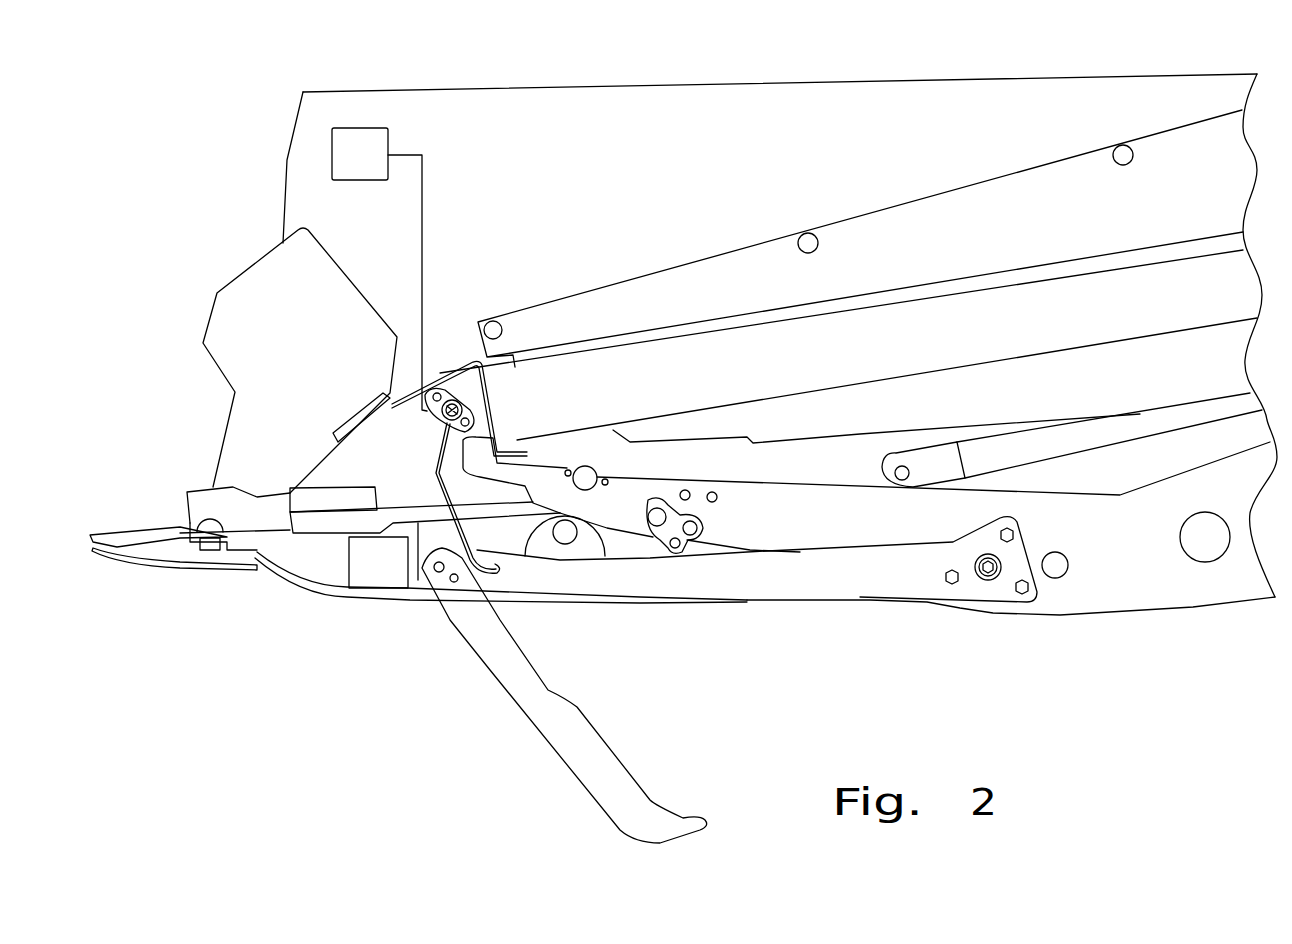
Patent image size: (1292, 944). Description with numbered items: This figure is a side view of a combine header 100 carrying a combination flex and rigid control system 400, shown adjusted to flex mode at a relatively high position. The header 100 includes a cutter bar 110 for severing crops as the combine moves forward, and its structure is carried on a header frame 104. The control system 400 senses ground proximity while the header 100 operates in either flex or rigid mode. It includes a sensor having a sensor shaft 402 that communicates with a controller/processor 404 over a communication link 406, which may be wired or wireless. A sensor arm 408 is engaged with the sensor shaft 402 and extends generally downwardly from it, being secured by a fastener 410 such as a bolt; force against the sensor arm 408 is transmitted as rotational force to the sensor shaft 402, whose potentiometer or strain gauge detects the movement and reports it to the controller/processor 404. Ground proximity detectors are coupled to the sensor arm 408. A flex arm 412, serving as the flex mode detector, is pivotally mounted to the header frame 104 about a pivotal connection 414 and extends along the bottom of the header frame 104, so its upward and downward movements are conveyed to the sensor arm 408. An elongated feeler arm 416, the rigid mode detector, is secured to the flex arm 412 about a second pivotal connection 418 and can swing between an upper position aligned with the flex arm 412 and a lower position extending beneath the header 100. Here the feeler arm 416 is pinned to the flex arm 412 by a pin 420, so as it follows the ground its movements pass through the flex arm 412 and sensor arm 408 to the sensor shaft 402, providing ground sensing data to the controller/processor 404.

The header 100 is at (768, 114).
The header frame 104 is at (1132, 580).
The cutter bar 110 is at (156, 576).
The combination flex and rigid control system 400 is at (375, 695).
The sensor shaft 402 is at (453, 393).
The controller/processor 404 is at (332, 147).
The communication link 406 is at (425, 172).
The sensor arm 408 is at (432, 448).
The fastener 410 is at (470, 403).
The flex arm 412 is at (805, 587).
The pivotal connection 414 is at (988, 575).
The feeler arm 416 is at (578, 772).
The pivotal connection 418 is at (438, 572).
The pin 420 is at (453, 583).